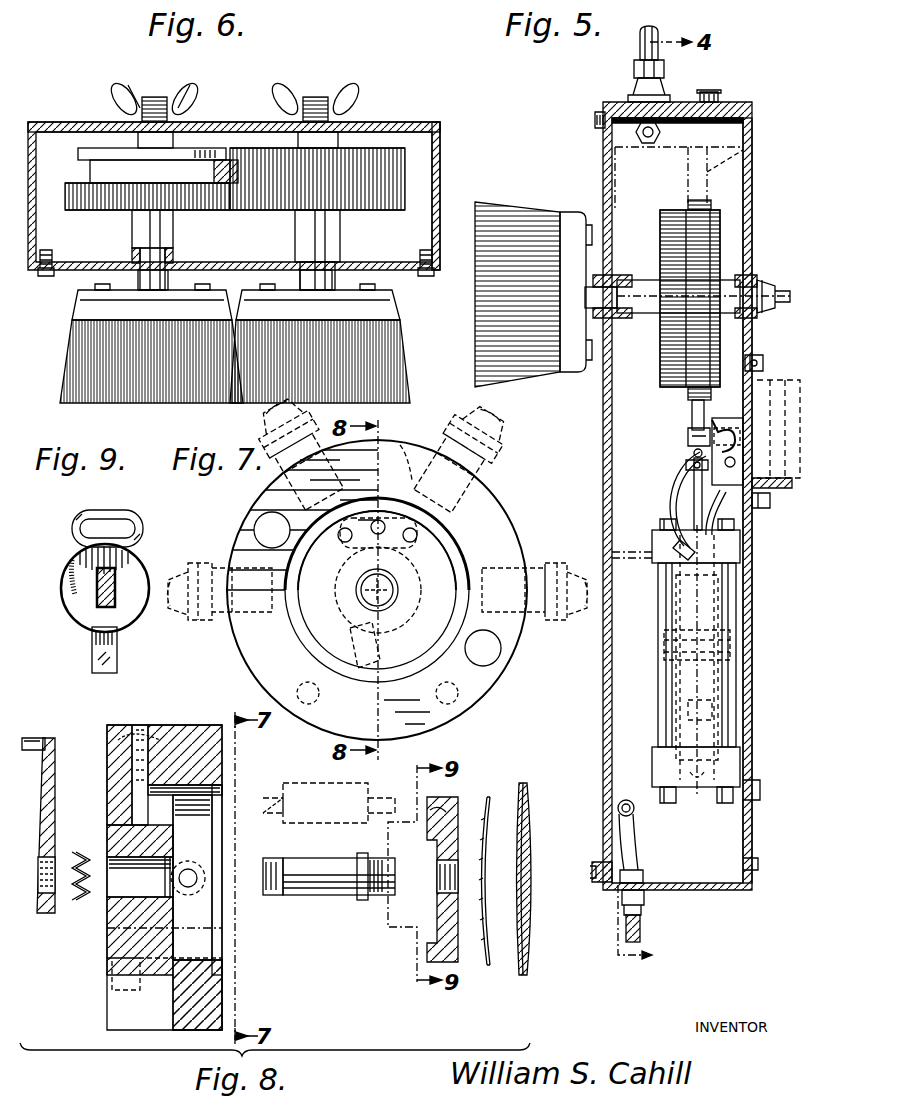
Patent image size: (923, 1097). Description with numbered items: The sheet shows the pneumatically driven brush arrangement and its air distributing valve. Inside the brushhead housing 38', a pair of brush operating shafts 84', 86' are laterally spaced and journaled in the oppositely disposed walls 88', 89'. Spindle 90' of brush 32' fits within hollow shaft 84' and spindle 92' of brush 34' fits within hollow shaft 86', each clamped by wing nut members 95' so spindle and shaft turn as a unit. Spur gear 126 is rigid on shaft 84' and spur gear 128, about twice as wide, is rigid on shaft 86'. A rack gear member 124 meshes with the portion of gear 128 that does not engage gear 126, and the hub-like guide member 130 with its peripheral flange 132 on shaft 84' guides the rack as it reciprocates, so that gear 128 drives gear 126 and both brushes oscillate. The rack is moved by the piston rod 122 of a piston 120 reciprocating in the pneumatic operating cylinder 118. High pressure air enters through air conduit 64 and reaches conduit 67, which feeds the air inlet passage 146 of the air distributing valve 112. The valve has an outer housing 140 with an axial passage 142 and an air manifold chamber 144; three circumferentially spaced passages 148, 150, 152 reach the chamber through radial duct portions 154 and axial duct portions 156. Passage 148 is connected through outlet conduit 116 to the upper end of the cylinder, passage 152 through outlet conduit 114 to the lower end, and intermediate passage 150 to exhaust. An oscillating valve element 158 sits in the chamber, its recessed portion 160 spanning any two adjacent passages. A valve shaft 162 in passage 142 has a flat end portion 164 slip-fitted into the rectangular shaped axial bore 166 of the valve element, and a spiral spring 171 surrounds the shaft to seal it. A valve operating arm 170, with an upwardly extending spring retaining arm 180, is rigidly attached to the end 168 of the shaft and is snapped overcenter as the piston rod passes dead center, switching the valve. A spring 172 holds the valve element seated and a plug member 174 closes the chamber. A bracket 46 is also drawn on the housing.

In FIG. 6, the brush 32' is at (135, 343).
In FIG. 6, the brush 34' is at (336, 343).
In FIG. 5, the brush 34' is at (533, 276).
In FIG. 6, the brushhead housing 38' is at (460, 180).
In FIG. 5, the bracket 46 is at (798, 380).
In FIG. 5, the air conduit 64 is at (628, 800).
In FIG. 7, the conduit 67 is at (188, 570).
In FIG. 6, the brush operating shaft 84' is at (133, 250).
In FIG. 6, the brush operating shaft 86' is at (298, 250).
In FIG. 5, the brush operating shaft 86' is at (703, 269).
In FIG. 6, the wall 88' is at (234, 196).
In FIG. 5, the wall 88' is at (652, 496).
In FIG. 6, the wall 89' is at (234, 112).
In FIG. 5, the wall 89' is at (767, 500).
In FIG. 6, the spindle 90' is at (113, 280).
In FIG. 6, the spindle 92' is at (275, 280).
In FIG. 5, the spindle 92' is at (616, 314).
In FIG. 6, the wing nut member 95' is at (234, 105).
In FIG. 5, the wing nut member 95' is at (762, 272).
In FIG. 5, the air distributing valve 112 is at (728, 418).
In FIG. 5, the outlet conduit 114 is at (678, 722).
In FIG. 7, the outlet conduit 114 is at (492, 430).
In FIG. 5, the outlet conduit 116 is at (686, 465).
In FIG. 7, the outlet conduit 116 is at (272, 438).
In FIG. 5, the pneumatic operating cylinder 118 is at (658, 618).
In FIG. 5, the piston 120 is at (660, 670).
In FIG. 5, the piston rod 122 is at (690, 480).
In FIG. 6, the rack gear member 124 is at (214, 170).
In FIG. 5, the rack gear member 124 is at (706, 203).
In FIG. 6, the spur gear 126 is at (85, 212).
In FIG. 6, the spur gear 128 is at (385, 150).
In FIG. 5, the spur gear 128 is at (676, 210).
In FIG. 6, the hub-like guide member 130 is at (90, 170).
In FIG. 6, the peripheral flange 132 is at (90, 148).
In FIG. 8, the outer housing 140 is at (107, 745).
In FIG. 8, the axial passage 142 is at (120, 887).
In FIG. 7, the air manifold chamber 144 is at (436, 647).
In FIG. 8, the air manifold chamber 144 is at (205, 927).
In FIG. 7, the air inlet passage 146 is at (238, 558).
In FIG. 8, the air inlet passage 146 is at (198, 888).
In FIG. 7, the passage 148 is at (262, 490).
In FIG. 7, the passage 150 is at (410, 446).
In FIG. 7, the passage 152 is at (450, 508).
In FIG. 8, the duct portion 154 is at (132, 798).
In FIG. 8, the duct portion 156 is at (197, 880).
In FIG. 7, the oscillating valve element 158 is at (345, 622).
In FIG. 9, the oscillating valve element 158 is at (68, 568).
In FIG. 8, the oscillating valve element 158 is at (462, 794).
In FIG. 7, the recessed portion 160 is at (400, 570).
In FIG. 9, the recessed portion 160 is at (112, 525).
In FIG. 8, the valve shaft 162 is at (335, 858).
In FIG. 9, the flat end portion 164 is at (97, 590).
In FIG. 8, the flat end portion 164 is at (378, 858).
In FIG. 7, the rectangular shaped axial bore 166 is at (398, 600).
In FIG. 9, the rectangular shaped axial bore 166 is at (115, 592).
In FIG. 8, the rectangular shaped axial bore 166 is at (440, 888).
In FIG. 8, the end 168 is at (272, 860).
In FIG. 8, the valve operating arm 170 is at (42, 812).
In FIG. 8, the spiral spring 171 is at (80, 850).
In FIG. 8, the spring 172 is at (484, 858).
In FIG. 8, the plug member 174 is at (530, 860).
In FIG. 8, the spring retaining arm 180 is at (30, 740).